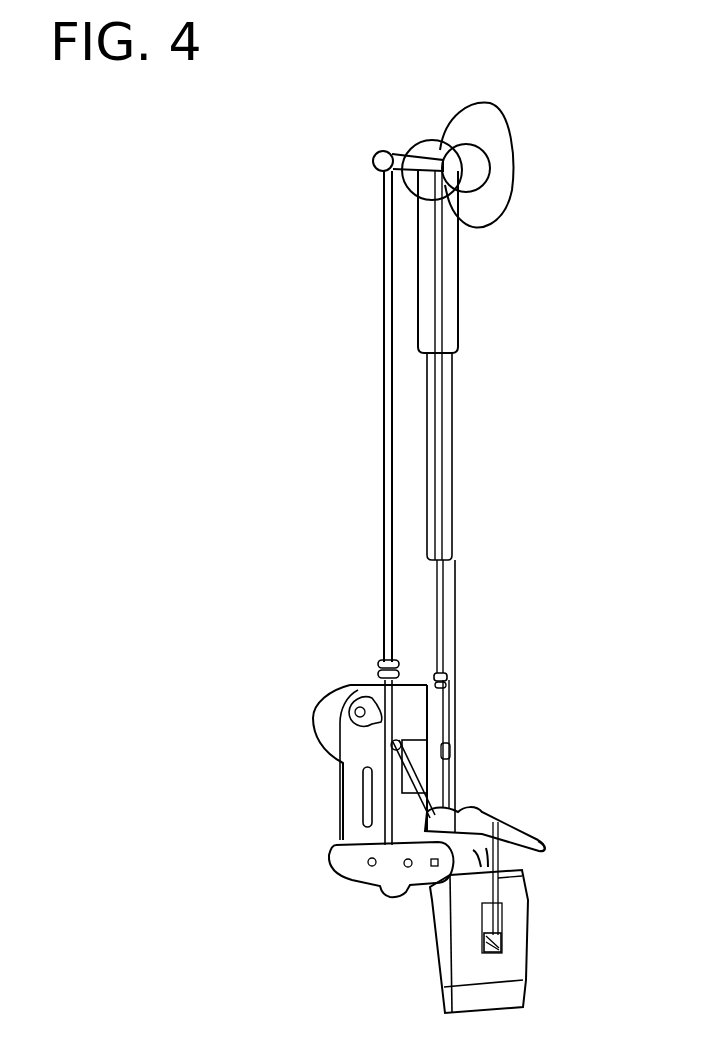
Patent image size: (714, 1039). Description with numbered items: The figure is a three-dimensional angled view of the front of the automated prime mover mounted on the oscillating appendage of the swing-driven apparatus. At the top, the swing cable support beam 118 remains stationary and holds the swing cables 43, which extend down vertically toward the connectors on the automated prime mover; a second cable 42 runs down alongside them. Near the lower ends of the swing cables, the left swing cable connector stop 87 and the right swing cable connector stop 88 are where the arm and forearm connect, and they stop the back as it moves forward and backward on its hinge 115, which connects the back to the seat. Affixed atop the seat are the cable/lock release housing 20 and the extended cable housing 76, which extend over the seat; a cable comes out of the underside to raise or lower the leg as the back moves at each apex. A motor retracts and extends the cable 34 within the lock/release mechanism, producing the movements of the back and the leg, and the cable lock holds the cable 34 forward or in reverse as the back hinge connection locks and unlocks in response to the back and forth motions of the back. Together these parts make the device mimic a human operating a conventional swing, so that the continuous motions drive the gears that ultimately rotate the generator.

The swing cable support beam 118 is at (373, 161).
The cable 42 is at (383, 537).
The swing cables 43 is at (443, 317).
The cable 34 is at (427, 805).
The left swing cable connector stop 87 is at (377, 663).
The right swing cable connector stop 88 is at (450, 673).
The hinge 115 is at (363, 813).
The cable/lock release housing 20 is at (480, 812).
The extended cable housing 76 is at (547, 843).